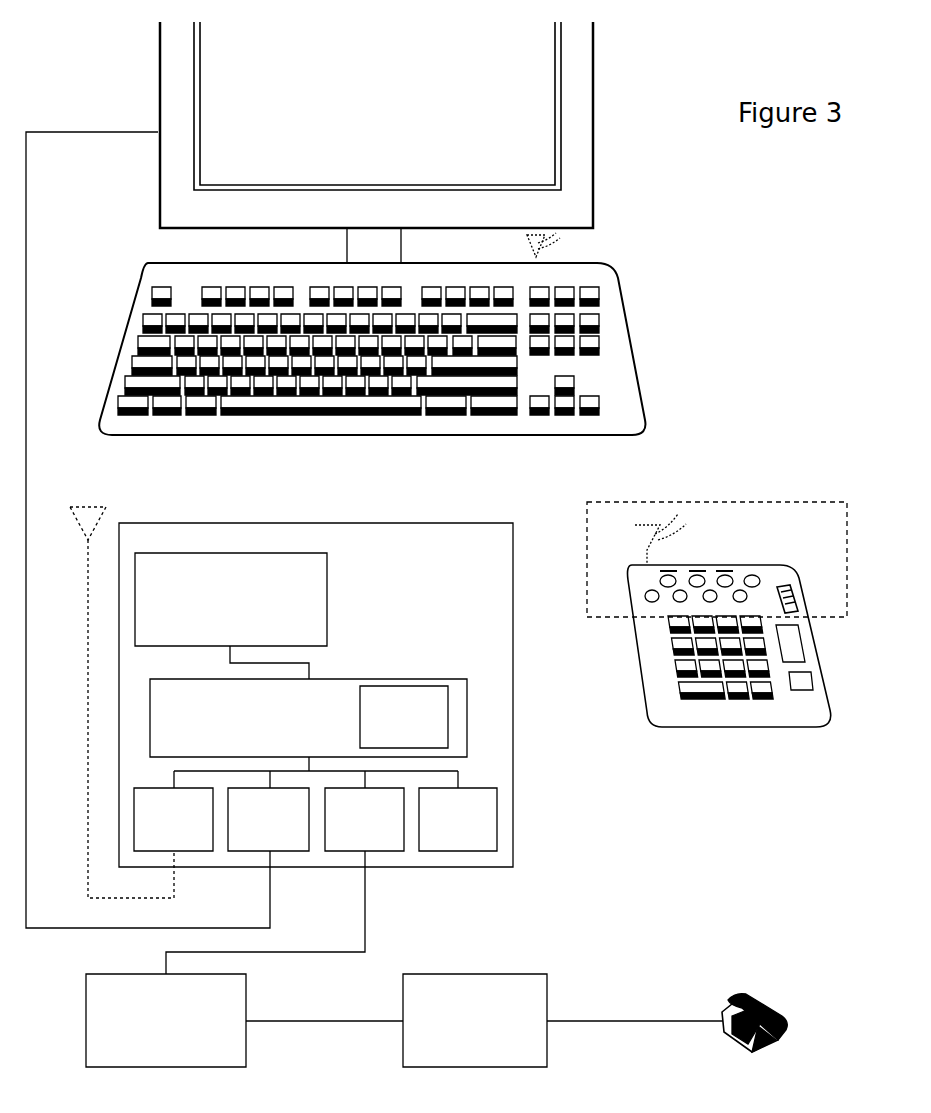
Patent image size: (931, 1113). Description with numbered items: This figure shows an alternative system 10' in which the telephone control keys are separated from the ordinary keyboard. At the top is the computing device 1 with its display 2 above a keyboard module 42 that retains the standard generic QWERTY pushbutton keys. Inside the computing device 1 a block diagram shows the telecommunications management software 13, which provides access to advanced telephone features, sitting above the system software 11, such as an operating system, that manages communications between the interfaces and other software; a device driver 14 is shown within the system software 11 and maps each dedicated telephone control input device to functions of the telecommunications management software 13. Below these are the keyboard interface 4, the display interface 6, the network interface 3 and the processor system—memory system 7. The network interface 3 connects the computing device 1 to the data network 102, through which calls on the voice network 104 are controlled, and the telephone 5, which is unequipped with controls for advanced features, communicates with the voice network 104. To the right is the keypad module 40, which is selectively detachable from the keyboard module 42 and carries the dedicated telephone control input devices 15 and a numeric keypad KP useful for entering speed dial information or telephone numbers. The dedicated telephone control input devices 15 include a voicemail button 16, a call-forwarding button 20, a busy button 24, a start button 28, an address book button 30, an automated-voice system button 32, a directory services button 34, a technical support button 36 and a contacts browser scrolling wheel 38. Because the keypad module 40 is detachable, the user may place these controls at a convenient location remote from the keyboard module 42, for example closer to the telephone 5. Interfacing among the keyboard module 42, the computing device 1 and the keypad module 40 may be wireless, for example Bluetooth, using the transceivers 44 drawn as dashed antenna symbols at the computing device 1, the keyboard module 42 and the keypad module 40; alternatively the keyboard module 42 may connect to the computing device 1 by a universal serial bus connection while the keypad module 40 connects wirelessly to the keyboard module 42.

The display 2 is at (595, 101).
The keyboard module 42 is at (630, 318).
The transceivers 44 is at (523, 242).
The computing device 1 is at (316, 695).
The telecommunications management software 13 is at (231, 616).
The system software 11 is at (308, 733).
The device driver 14 is at (404, 717).
The keyboard interface 4 is at (173, 819).
The display interface 6 is at (268, 819).
The network interface 3 is at (364, 819).
The processor system—memory system 7 is at (458, 819).
The data network 102 is at (166, 1020).
The voice network 104 is at (475, 1020).
The telephone 5 is at (732, 997).
The alternative system 10' is at (744, 885).
The keypad module 40 is at (692, 638).
The dedicated telephone control input devices 15 is at (578, 563).
The voicemail button 16 is at (670, 577).
The call-forwarding button 20 is at (699, 577).
The busy button 24 is at (727, 577).
The start button 28 is at (755, 576).
The address book button 30 is at (645, 594).
The automated-voice system button 32 is at (673, 598).
The directory services button 34 is at (703, 600).
The technical support button 36 is at (746, 598).
The contacts browser scrolling wheel 38 is at (800, 598).
The numeric keypad KP is at (706, 705).